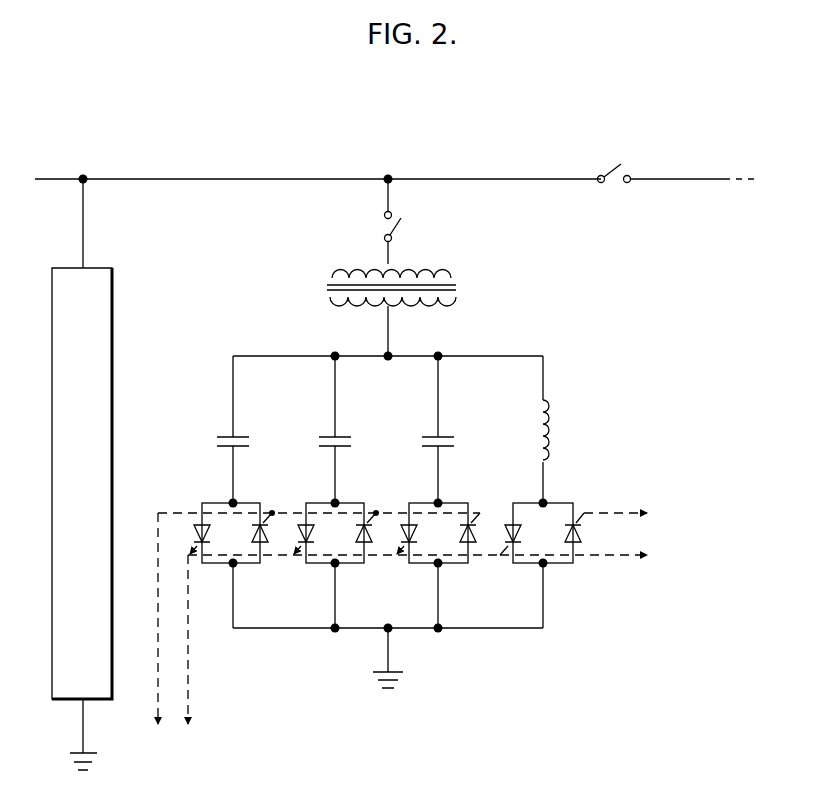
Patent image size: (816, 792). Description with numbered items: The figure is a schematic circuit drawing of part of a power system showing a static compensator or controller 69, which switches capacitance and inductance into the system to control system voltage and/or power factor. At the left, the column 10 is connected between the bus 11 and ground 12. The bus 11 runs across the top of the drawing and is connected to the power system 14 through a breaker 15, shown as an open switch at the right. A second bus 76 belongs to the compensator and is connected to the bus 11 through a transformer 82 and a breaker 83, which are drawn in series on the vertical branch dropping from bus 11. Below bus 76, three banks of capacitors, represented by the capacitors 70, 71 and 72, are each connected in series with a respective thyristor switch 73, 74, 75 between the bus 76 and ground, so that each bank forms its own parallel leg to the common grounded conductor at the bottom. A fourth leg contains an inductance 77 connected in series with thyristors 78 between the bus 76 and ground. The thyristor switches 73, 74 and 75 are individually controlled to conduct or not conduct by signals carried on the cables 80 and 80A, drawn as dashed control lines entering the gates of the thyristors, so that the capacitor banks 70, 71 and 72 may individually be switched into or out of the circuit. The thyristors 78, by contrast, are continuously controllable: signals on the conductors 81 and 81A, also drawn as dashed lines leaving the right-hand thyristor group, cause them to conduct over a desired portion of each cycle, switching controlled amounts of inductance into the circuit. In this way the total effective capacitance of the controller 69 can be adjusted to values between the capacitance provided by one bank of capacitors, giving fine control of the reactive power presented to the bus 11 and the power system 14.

The column 10 is at (108, 340).
The bus 11 is at (347, 178).
The ground 12 is at (83, 720).
The power system 14 is at (700, 178).
The breaker 15 is at (611, 171).
The static compensator 69 is at (608, 353).
The capacitor bank 70 is at (226, 436).
The capacitor bank 71 is at (328, 436).
The capacitor bank 72 is at (431, 436).
The thyristor switch 73 is at (244, 545).
The thyristor switch 74 is at (347, 545).
The thyristor switch 75 is at (450, 545).
The bus 76 is at (305, 355).
The inductance 77 is at (548, 420).
The thyristors 78 is at (554, 545).
The cable 80 is at (189, 683).
The cable 80A is at (160, 705).
The conductor 81 is at (610, 506).
The conductor 81A is at (603, 561).
The transformer 82 is at (460, 283).
The breaker 83 is at (398, 229).